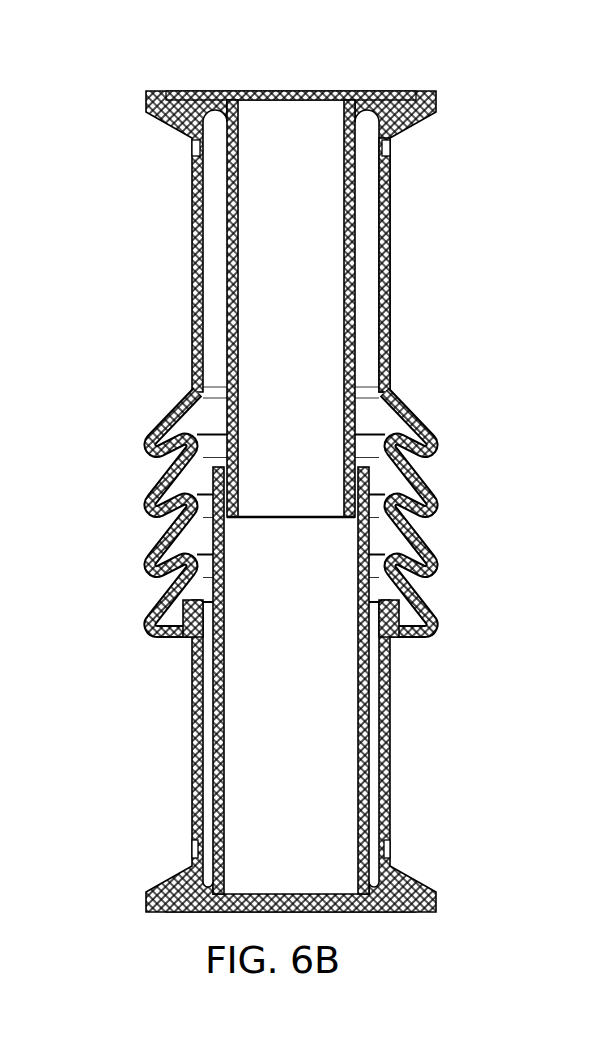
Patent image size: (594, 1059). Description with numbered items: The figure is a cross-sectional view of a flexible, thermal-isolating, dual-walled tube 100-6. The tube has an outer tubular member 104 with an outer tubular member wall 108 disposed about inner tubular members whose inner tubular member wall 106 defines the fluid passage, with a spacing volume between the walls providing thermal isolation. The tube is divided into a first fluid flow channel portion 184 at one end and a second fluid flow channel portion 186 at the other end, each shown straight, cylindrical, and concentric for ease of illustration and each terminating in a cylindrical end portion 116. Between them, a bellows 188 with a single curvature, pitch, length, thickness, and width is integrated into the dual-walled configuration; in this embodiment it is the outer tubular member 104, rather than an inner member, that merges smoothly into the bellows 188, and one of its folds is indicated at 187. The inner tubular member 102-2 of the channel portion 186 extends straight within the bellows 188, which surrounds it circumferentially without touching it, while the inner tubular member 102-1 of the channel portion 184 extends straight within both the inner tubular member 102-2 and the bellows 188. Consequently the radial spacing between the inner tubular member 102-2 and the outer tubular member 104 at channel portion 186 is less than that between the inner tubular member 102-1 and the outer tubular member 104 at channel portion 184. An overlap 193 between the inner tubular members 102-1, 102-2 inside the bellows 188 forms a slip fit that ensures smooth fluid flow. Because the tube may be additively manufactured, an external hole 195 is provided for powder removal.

The flexible, thermal-isolating tube 100-6 is at (500, 171).
The inner tubular member of the channel portion 184 102-1 is at (291, 308).
The inner tubular member of the channel portion 186 102-2 is at (359, 720).
The outer tubular member 104 is at (305, 508).
The inner tubular member wall 106 is at (346, 338).
The outer tubular member wall 108 is at (388, 330).
The cylindrical end portion 116 is at (430, 101).
The first fluid flow channel portion 184 is at (312, 244).
The second fluid flow channel portion 186 is at (319, 756).
The fold 187 is at (147, 440).
The bellows 188 is at (305, 514).
The overlap 193 is at (338, 445).
The external hole 195 is at (195, 152).